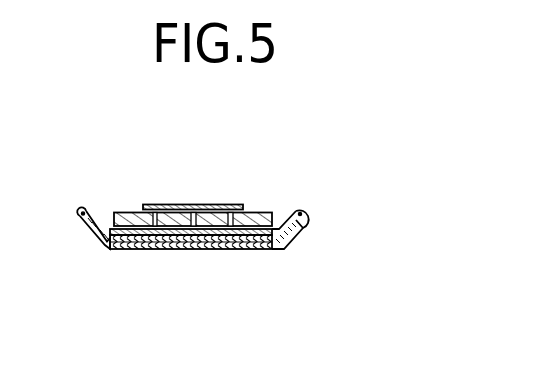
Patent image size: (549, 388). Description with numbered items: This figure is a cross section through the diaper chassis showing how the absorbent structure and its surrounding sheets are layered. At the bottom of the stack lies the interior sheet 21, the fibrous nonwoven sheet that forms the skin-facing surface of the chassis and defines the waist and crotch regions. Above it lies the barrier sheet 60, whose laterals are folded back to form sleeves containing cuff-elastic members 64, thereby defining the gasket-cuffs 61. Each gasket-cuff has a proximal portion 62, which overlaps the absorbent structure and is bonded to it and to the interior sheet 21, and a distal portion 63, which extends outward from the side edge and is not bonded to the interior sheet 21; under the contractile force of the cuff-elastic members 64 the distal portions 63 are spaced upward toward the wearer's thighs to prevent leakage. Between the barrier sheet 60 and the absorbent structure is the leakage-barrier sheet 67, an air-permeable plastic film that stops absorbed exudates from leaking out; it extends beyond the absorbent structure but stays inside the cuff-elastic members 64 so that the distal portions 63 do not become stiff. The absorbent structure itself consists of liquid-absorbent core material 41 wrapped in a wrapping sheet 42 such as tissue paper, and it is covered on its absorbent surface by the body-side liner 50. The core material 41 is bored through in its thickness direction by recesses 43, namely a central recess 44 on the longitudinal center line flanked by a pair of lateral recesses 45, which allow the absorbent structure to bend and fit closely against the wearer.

The interior sheet 21 is at (148, 250).
The liquid-absorbent core material 41 is at (252, 238).
The wrapping sheet 42 is at (256, 213).
The recesses 43 is at (238, 127).
The central recess 44 is at (192, 204).
The lateral recesses 45 is at (152, 204).
The body-side liner 50 is at (238, 204).
The barrier sheet 60 is at (340, 233).
The gasket-cuffs 61 is at (340, 203).
The proximal portions 62 is at (272, 224).
The distal portions 63 is at (290, 208).
The cuff-elastic members 64 is at (307, 217).
The leakage-barrier sheet 67 is at (198, 246).